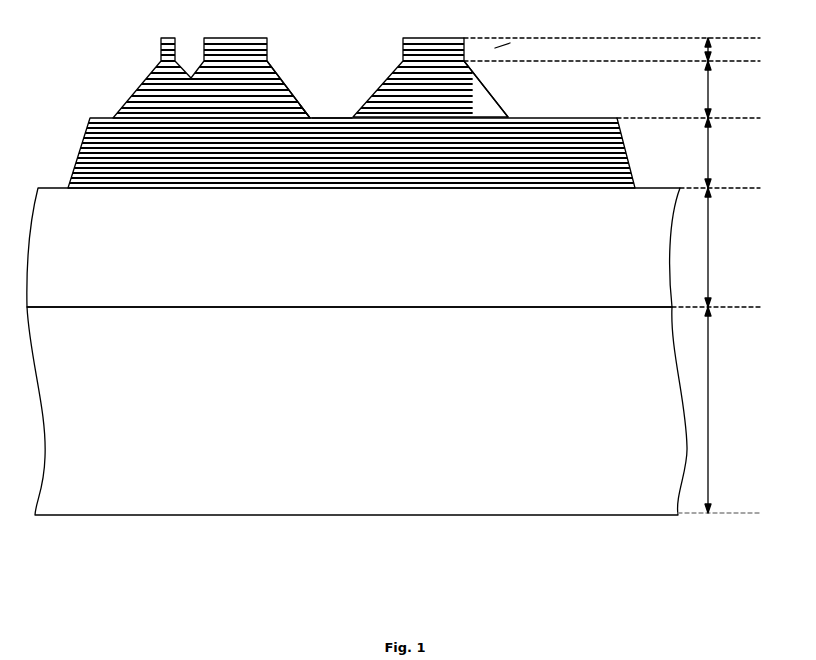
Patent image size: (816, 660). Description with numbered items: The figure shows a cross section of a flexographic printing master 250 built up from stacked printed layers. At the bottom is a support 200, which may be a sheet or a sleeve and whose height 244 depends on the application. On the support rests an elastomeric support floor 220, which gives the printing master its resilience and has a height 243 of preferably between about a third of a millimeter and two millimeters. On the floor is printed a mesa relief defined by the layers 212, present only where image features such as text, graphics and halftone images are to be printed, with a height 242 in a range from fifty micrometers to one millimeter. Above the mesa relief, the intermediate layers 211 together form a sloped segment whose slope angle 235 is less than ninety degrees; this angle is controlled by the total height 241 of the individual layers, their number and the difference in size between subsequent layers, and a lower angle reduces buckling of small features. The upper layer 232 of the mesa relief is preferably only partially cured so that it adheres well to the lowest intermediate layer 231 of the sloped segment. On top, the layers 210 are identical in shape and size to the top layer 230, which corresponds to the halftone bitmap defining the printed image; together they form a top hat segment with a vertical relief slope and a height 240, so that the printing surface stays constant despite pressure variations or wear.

The support 200 is at (372, 414).
The elastomeric support floor 220 is at (388, 273).
The layers defining the mesa relief 212 is at (618, 123).
The top layer 230 is at (217, 36).
The intermediate layers forming a sloped segment 211 is at (309, 116).
The lowest intermediate layer of the sloped segment 231 is at (313, 113).
The upper layer of the mesa relief 232 is at (342, 119).
The top hat segment layers 210 is at (403, 59).
The slope angle 235 is at (483, 115).
The height of the top hat segment 240 is at (612, 49).
The total height of the intermediate layers 241 is at (688, 89).
The height of the mesa relief 242 is at (720, 153).
The height of the elastomeric floor 243 is at (716, 247).
The height of the support 244 is at (719, 410).
The flexographic printing master 250 is at (63, 533).